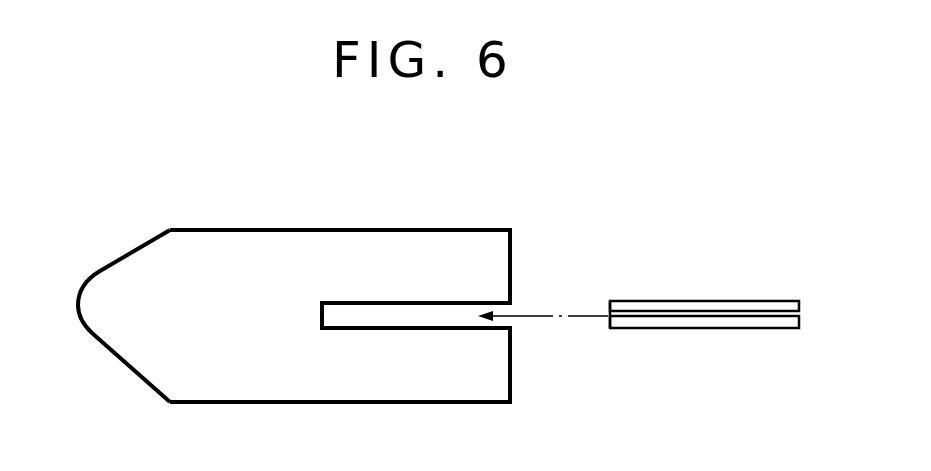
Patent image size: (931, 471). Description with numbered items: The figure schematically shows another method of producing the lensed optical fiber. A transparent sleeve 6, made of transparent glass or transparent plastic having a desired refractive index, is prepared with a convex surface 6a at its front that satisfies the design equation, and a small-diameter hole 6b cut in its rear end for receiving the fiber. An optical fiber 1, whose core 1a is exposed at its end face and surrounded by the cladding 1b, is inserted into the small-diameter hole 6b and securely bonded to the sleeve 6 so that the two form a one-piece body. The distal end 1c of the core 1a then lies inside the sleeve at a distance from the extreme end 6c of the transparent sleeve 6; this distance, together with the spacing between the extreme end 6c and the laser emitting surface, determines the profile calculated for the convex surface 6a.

The transparent sleeve 6 is at (277, 265).
The convex surface 6a is at (112, 268).
The small-diameter hole 6b is at (452, 315).
The extreme end 6c is at (77, 311).
The optical fiber 1 is at (683, 296).
The core 1a is at (694, 312).
The cladding 1b is at (668, 308).
The distal end 1c is at (607, 314).